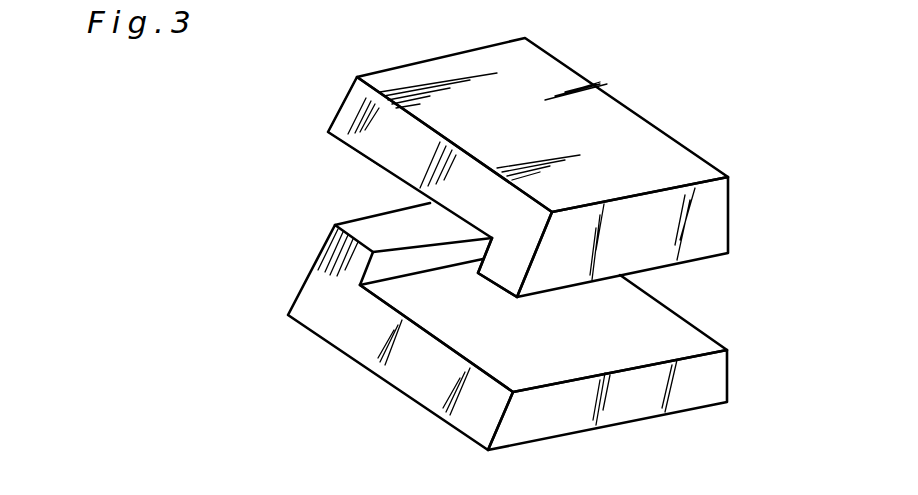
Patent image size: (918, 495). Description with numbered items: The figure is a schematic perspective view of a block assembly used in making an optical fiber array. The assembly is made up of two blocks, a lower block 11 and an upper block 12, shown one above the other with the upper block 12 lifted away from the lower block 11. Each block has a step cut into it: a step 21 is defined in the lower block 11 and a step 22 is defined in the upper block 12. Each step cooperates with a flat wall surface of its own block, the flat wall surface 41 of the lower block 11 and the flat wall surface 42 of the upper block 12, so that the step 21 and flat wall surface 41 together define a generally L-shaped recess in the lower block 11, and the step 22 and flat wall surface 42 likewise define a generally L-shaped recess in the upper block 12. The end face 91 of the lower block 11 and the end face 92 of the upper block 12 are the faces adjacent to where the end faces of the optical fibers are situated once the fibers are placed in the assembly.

The lower block 11 is at (697, 380).
The upper block 12 is at (683, 162).
The step 21 is at (382, 270).
The step 22 is at (478, 257).
The flat wall surface 41 is at (597, 320).
The flat wall surface 42 is at (380, 167).
The end face 91 is at (412, 363).
The end face 92 is at (368, 110).